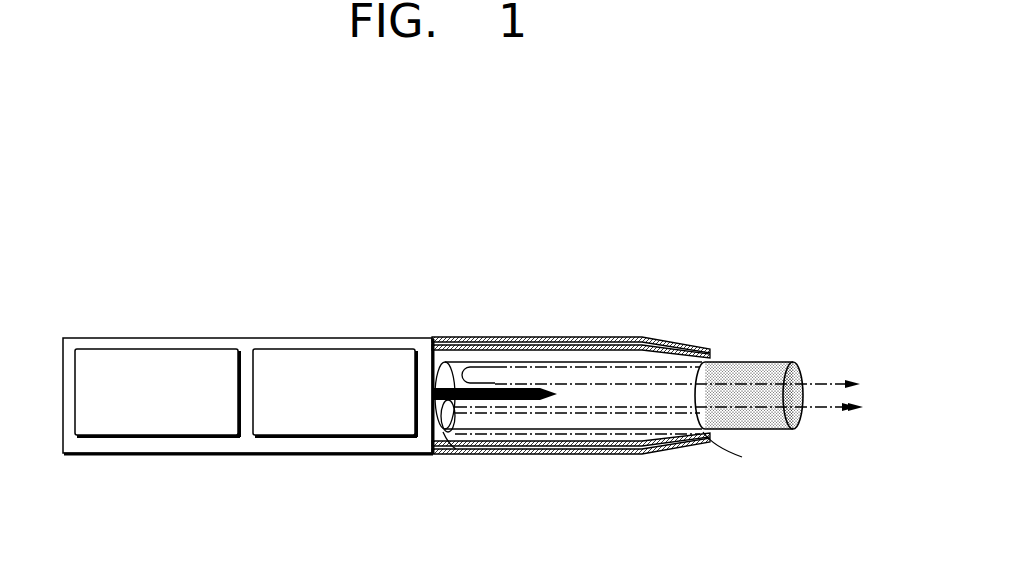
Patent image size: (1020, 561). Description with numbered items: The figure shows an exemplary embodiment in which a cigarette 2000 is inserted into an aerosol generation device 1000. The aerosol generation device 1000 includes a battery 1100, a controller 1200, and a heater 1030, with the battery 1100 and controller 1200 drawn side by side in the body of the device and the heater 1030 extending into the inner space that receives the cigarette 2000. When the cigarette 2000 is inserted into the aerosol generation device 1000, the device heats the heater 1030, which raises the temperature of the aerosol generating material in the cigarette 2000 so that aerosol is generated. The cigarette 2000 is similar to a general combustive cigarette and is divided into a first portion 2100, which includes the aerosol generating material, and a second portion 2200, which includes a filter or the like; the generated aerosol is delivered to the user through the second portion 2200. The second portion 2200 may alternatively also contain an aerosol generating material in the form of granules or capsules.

The aerosol generation device 1000 is at (664, 244).
The battery 1100 is at (165, 349).
The controller 1200 is at (349, 349).
The heater 1030 is at (490, 383).
The cigarette 2000 is at (779, 440).
The first portion 2100 is at (585, 362).
The second portion 2200 is at (752, 332).